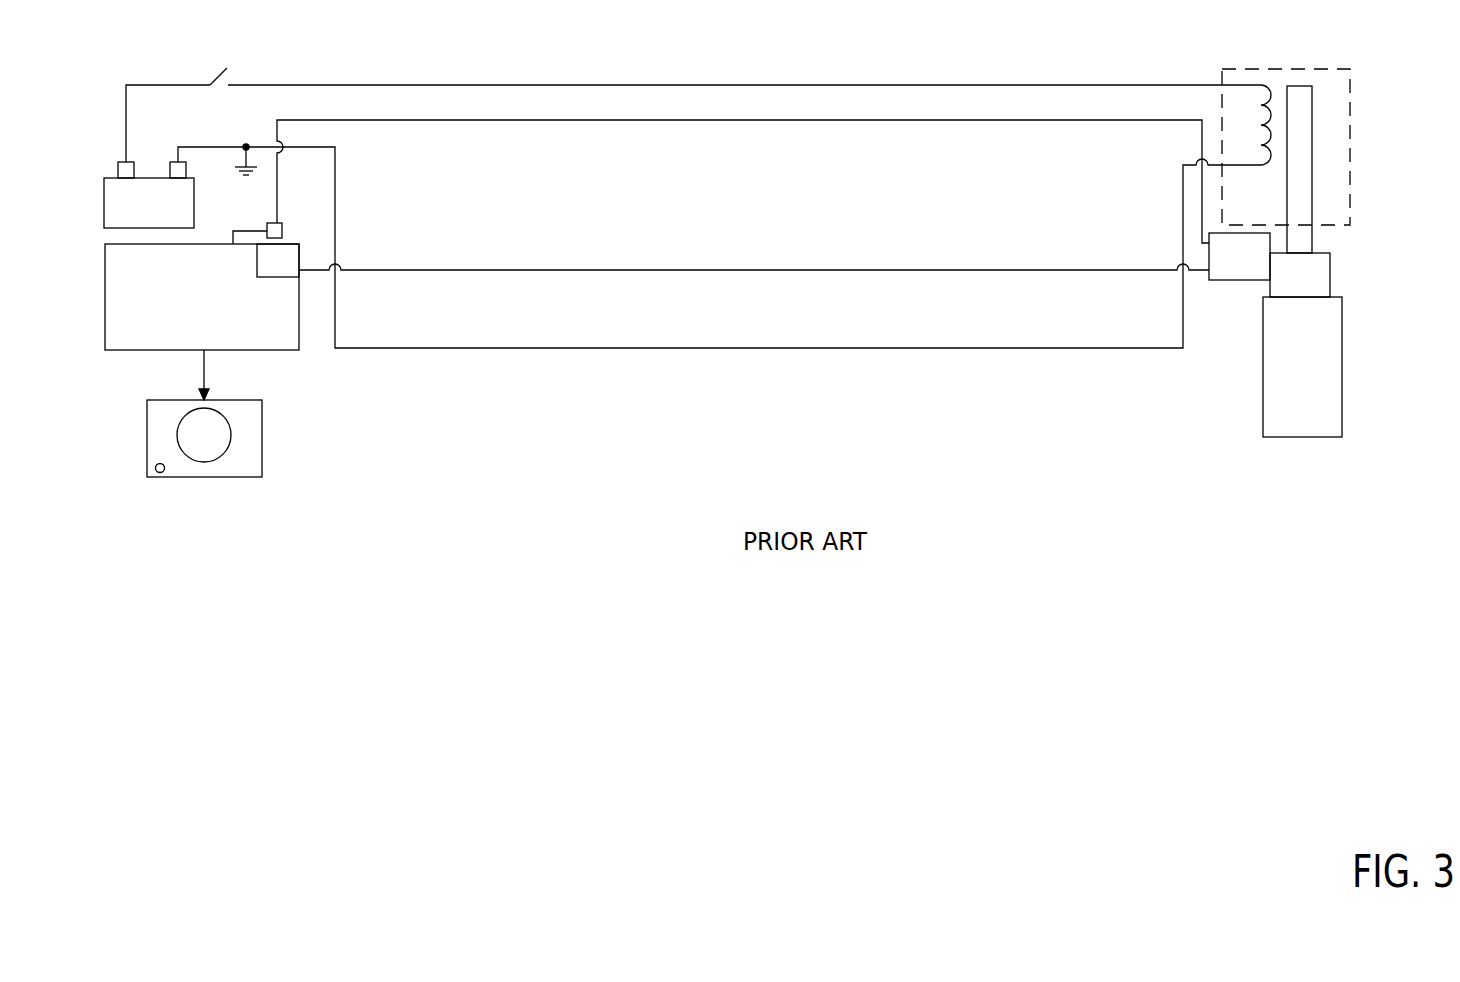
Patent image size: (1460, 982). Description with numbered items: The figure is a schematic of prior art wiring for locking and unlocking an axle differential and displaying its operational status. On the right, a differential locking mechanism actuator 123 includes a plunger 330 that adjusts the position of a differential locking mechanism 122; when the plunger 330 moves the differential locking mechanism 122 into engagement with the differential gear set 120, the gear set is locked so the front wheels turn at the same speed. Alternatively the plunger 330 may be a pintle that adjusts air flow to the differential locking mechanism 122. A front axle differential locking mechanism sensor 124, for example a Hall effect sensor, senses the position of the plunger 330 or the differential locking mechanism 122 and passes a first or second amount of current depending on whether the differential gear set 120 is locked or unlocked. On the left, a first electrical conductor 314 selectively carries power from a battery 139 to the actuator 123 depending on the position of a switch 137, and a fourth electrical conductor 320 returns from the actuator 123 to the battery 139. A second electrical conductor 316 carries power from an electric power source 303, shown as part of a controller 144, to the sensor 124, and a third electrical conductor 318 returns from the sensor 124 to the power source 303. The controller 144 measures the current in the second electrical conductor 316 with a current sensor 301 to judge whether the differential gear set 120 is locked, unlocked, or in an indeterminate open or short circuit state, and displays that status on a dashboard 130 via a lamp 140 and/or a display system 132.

The differential gear set 120 is at (1302, 367).
The differential locking mechanism 122 is at (1300, 275).
The differential locking mechanism actuator 123 is at (1333, 69).
The front axle differential locking mechanism sensor 124 is at (1239, 256).
The dashboard 130 is at (147, 421).
The display system 132 is at (185, 446).
The switch 137 is at (212, 83).
The battery 139 is at (131, 216).
The lamp 140 is at (158, 474).
The controller 144 is at (184, 309).
The current sensor 301 is at (265, 225).
The electric power source 303 is at (266, 256).
The first electrical conductor 314 is at (572, 84).
The second electrical conductor 316 is at (578, 121).
The third electrical conductor 318 is at (575, 269).
The fourth electrical conductor 320 is at (575, 347).
The plunger 330 is at (1298, 162).